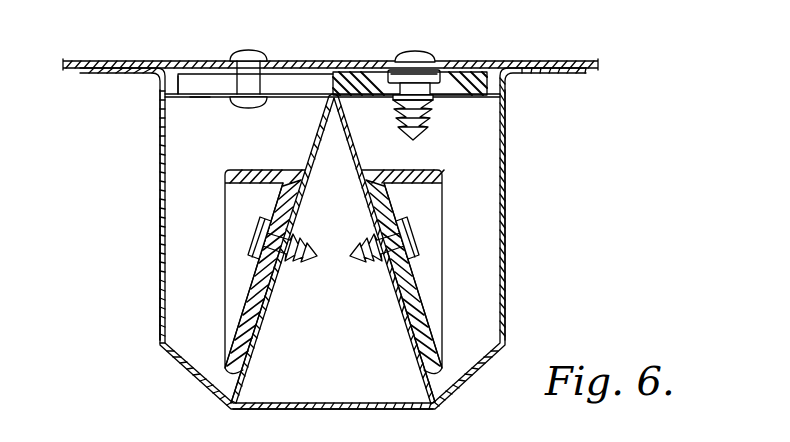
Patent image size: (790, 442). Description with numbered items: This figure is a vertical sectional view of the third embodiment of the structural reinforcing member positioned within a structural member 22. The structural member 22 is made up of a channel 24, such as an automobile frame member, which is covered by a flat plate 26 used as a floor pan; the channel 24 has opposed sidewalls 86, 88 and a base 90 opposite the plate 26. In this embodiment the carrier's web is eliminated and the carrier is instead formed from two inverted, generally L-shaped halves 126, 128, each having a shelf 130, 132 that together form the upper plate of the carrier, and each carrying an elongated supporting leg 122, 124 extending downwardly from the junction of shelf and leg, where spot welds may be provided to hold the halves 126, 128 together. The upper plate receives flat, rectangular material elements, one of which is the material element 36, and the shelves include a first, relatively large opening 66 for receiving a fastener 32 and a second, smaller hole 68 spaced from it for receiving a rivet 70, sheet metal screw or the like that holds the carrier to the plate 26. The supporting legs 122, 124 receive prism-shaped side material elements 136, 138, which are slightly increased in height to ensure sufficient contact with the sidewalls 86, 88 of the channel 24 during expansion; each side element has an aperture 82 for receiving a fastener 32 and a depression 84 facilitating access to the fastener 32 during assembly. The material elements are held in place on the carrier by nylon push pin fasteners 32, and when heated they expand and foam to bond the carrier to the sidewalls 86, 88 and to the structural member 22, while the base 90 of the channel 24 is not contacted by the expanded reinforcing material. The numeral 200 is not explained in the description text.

The structural member 22 is at (160, 277).
The channel 24 is at (510, 282).
The flat plate 26 is at (500, 61).
The fastener 32 is at (428, 122).
The material element 36 is at (305, 77).
The first opening 66 is at (395, 98).
The second hole 68 is at (268, 90).
The rivet 70 is at (250, 50).
The aperture 82 is at (373, 217).
The depression 84 is at (243, 211).
The sidewall 86 is at (506, 243).
The sidewall 88 is at (162, 258).
The base 90 is at (325, 403).
The supporting leg 122 is at (410, 337).
The supporting leg 124 is at (262, 322).
The L-shaped half 126 is at (351, 145).
The L-shaped half 128 is at (312, 144).
The shelf 130 is at (362, 88).
The shelf 132 is at (171, 93).
The side material element 136 is at (392, 296).
The side material element 138 is at (238, 326).
The weld 200 is at (198, 100).